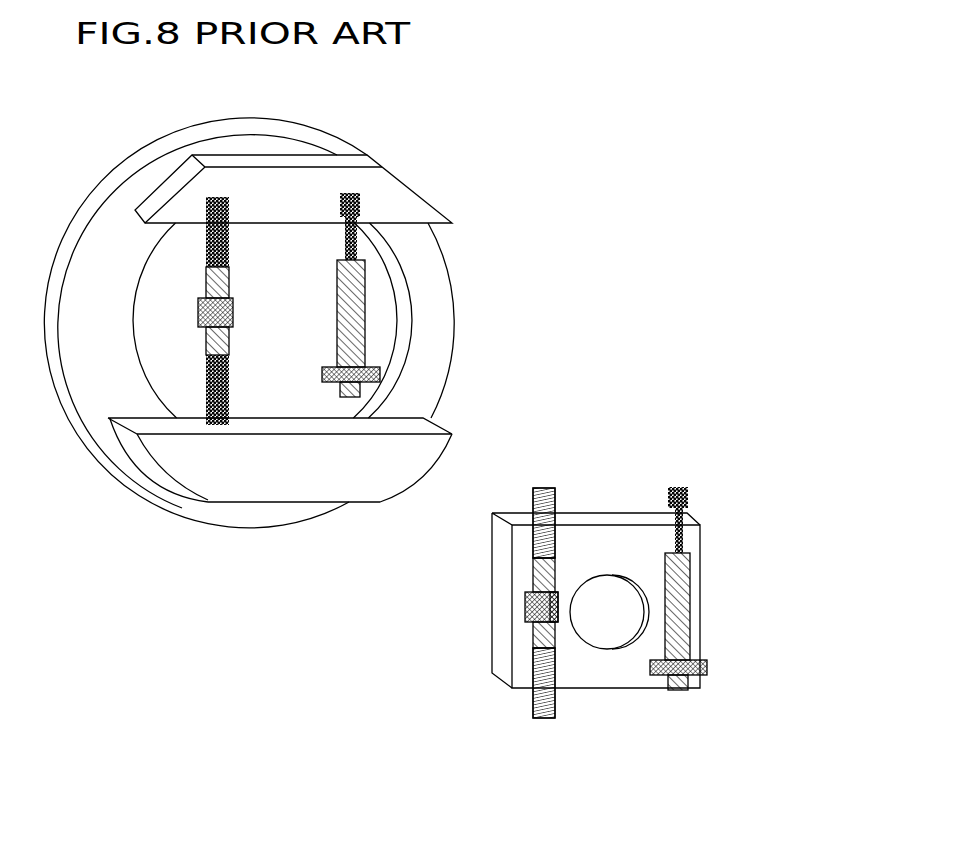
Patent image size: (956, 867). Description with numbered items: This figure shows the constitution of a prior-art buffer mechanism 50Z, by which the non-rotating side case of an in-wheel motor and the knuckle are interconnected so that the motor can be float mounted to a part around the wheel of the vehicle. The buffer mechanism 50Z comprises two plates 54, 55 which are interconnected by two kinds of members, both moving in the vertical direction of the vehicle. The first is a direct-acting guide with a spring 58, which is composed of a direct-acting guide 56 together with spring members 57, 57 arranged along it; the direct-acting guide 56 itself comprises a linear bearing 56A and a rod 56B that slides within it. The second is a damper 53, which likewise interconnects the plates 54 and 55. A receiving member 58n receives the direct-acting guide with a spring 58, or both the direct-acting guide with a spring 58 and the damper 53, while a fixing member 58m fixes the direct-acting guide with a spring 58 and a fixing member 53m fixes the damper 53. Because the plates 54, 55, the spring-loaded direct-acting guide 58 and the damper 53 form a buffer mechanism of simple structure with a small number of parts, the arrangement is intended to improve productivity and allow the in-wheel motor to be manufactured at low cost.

The buffer mechanism 50Z is at (550, 355).
The damper 53 is at (685, 584).
The fixing member 53m is at (707, 665).
The plate 54 is at (433, 312).
The plate 55 is at (695, 542).
The direct-acting guide 56 is at (533, 640).
The linear bearing 56A is at (533, 642).
The rod 56B is at (550, 492).
The spring member 57 is at (533, 543).
The direct-acting guide with a spring 58 is at (532, 590).
The fixing member 58m is at (561, 607).
The receiving member 58n is at (402, 187).